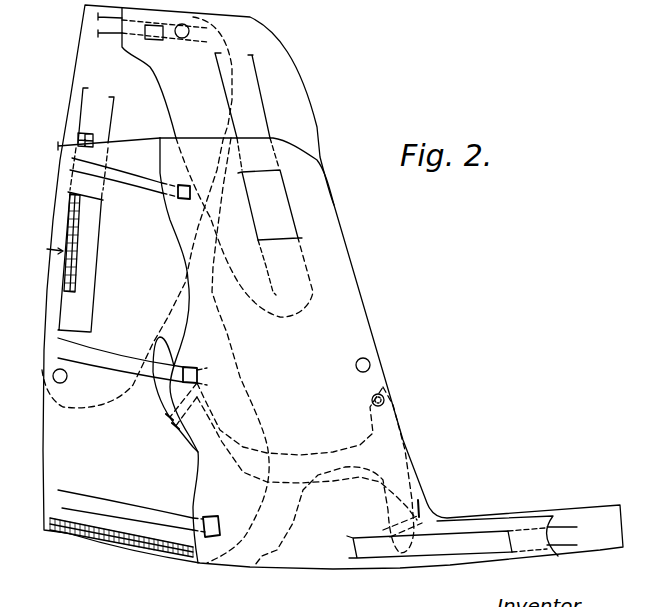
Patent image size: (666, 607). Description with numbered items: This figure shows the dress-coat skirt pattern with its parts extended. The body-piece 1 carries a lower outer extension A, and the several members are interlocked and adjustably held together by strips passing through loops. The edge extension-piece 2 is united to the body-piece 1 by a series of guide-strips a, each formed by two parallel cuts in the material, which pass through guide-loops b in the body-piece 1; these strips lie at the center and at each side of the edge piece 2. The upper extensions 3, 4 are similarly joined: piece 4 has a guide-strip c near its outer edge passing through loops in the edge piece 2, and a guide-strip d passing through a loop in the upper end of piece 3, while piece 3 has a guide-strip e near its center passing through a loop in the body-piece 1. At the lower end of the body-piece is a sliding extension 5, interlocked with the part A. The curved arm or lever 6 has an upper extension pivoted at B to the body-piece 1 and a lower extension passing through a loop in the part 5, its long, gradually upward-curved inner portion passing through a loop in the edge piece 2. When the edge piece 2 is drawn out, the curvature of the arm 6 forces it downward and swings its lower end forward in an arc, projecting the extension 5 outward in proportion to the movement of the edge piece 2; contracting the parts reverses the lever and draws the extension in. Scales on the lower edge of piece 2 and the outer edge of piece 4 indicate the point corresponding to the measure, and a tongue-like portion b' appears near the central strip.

The body-piece 1 is at (333, 287).
The edge extension-piece 2 is at (120, 348).
The upper extension 3 is at (155, 290).
The upper extension 4 is at (198, 162).
The sliding extension 5 is at (524, 536).
The curved arm or lever 6 is at (294, 474).
The guide-strips a is at (132, 187).
The guide-loops b is at (222, 518).
The tongue piece b' is at (168, 394).
The guide-strip c is at (98, 118).
The guide-strip d is at (102, 20).
The guide-strip e is at (253, 120).
The lower outer extension A is at (520, 555).
The pivot B is at (409, 376).